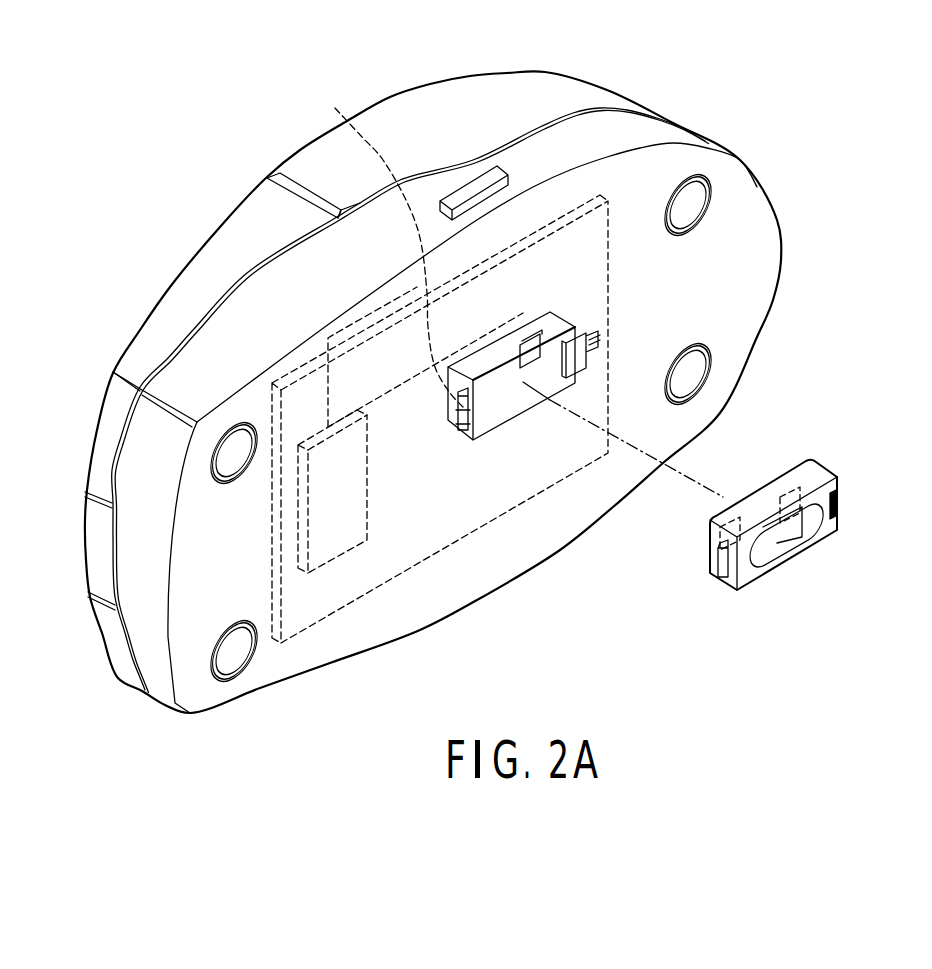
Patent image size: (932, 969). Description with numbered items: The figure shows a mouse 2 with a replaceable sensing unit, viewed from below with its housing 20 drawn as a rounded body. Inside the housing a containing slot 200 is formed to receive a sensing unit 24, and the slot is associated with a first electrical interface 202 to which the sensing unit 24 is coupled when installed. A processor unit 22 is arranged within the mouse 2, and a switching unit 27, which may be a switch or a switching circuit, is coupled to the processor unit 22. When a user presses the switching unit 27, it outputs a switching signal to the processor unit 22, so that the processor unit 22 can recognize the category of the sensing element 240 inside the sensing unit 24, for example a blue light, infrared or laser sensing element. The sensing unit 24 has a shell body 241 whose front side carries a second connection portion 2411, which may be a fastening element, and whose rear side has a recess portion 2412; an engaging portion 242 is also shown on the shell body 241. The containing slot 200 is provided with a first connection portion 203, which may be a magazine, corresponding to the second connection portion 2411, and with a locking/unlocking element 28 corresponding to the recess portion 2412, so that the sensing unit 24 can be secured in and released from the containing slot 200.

The mouse 2 is at (108, 69).
The housing 20 is at (187, 300).
The containing slot 200 is at (517, 403).
The first electrical interface 202 is at (557, 330).
The first connection portion 203 is at (389, 242).
The processor unit 22 is at (352, 512).
The sensing unit 24 is at (847, 521).
The sensing element 240 is at (810, 523).
The shell body 241 is at (753, 577).
The second connection portion 2411 is at (720, 578).
The recess portion 2412 is at (833, 503).
The engaging portion 242 is at (797, 487).
The switching unit 27 is at (478, 170).
The locking/unlocking element 28 is at (570, 355).